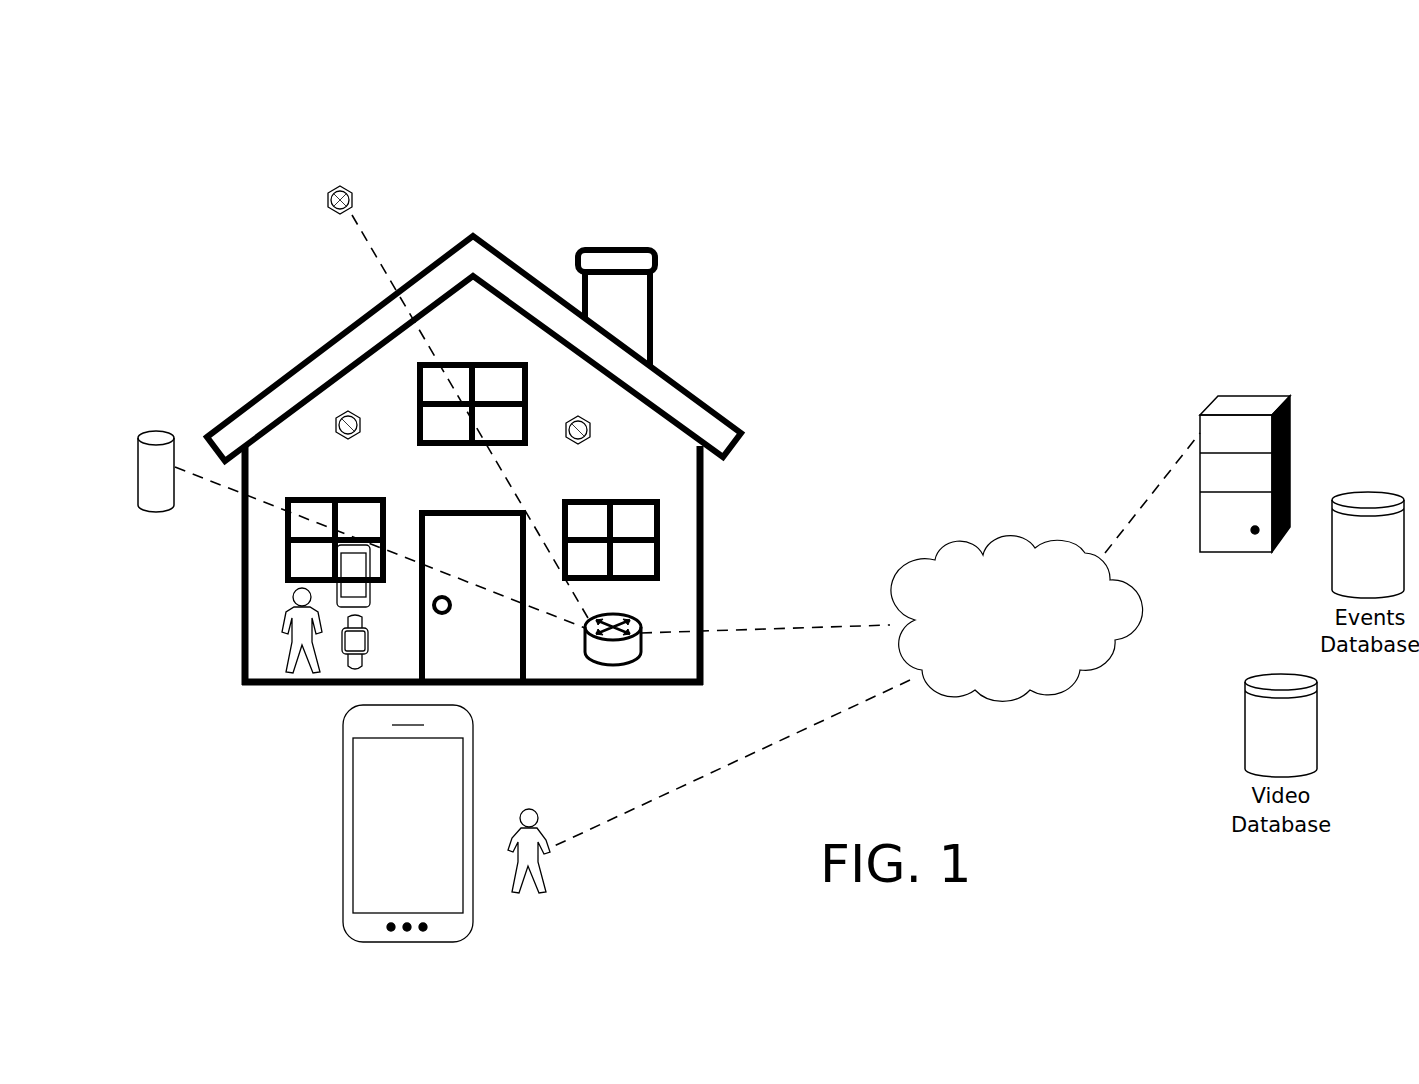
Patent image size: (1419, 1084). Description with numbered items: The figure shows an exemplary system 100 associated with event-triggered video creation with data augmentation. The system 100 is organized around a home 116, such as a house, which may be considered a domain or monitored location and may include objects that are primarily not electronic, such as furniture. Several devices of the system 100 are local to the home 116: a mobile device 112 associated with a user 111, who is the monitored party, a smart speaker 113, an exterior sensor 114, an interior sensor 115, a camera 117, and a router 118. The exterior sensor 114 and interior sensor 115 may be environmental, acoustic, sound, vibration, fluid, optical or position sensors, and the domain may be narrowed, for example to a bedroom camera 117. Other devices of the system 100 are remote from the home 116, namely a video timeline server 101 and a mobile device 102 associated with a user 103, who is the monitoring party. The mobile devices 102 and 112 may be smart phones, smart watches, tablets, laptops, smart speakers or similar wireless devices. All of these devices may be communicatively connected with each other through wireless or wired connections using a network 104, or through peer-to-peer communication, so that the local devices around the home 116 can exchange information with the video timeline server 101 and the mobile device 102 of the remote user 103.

The system 100 is at (131, 98).
The video timeline server 101 is at (1247, 395).
The mobile device 102 is at (473, 733).
The user 103 is at (529, 867).
The network 104 is at (1035, 636).
The user 111 is at (291, 611).
The mobile device 112 is at (362, 573).
The smart speaker 113 is at (150, 430).
The exterior sensor 114 is at (340, 186).
The interior sensor 115 is at (348, 411).
The home 116 is at (497, 248).
The camera 117 is at (584, 418).
The router 118 is at (633, 618).